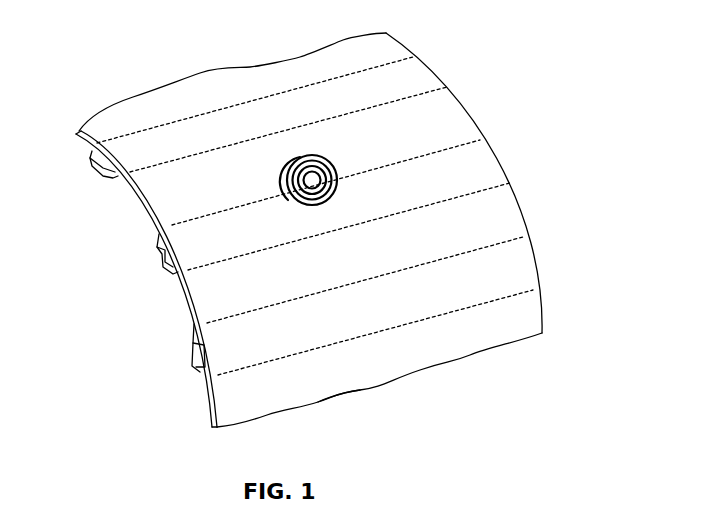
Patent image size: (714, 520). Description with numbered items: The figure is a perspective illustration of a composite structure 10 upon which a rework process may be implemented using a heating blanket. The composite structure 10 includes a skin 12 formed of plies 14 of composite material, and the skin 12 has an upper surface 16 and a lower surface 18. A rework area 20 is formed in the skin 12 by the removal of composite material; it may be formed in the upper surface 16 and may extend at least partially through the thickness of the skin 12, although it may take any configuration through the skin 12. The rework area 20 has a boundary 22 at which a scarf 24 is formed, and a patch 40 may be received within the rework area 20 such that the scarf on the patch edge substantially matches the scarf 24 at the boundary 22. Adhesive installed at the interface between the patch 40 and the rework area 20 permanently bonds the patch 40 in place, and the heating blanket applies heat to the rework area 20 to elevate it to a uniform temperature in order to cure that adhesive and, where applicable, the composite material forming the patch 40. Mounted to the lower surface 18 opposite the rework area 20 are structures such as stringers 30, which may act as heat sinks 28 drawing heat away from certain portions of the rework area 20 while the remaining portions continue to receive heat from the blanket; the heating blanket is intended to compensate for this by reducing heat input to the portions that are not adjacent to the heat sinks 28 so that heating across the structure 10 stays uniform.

The composite structure 10 is at (303, 224).
The skin 12 is at (198, 80).
The plies 14 is at (210, 407).
The upper surface 16 is at (435, 342).
The lower surface 18 is at (350, 393).
The rework area 20 is at (272, 108).
The boundary 22 is at (272, 108).
The scarf 24 is at (303, 155).
The heat sinks 28 is at (136, 261).
The stringers 30 is at (158, 258).
The patch 40 is at (293, 197).